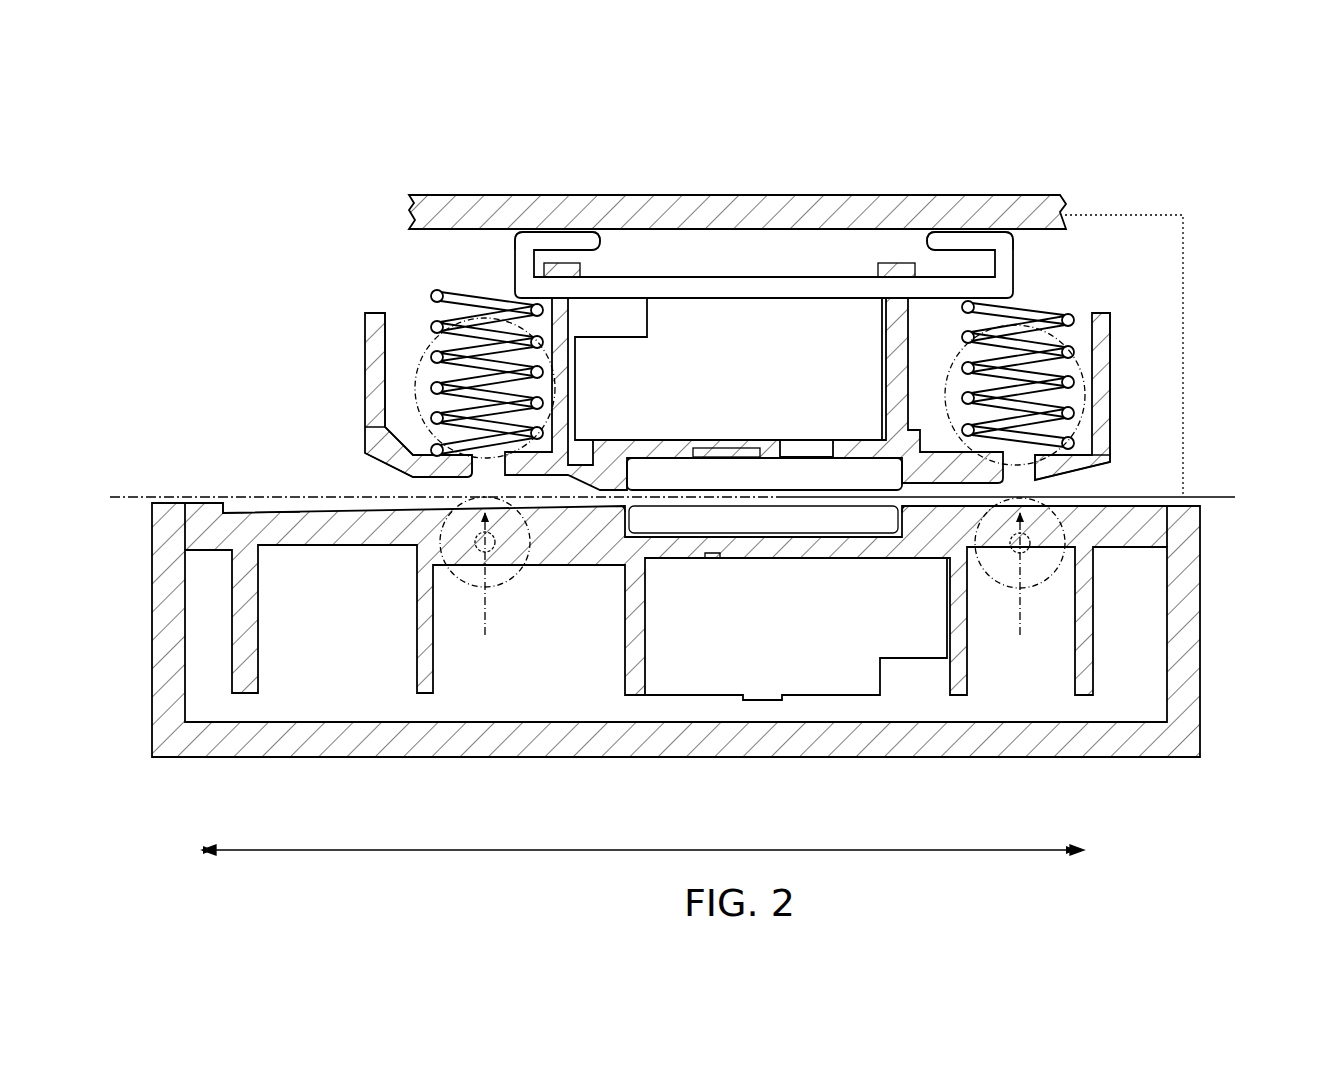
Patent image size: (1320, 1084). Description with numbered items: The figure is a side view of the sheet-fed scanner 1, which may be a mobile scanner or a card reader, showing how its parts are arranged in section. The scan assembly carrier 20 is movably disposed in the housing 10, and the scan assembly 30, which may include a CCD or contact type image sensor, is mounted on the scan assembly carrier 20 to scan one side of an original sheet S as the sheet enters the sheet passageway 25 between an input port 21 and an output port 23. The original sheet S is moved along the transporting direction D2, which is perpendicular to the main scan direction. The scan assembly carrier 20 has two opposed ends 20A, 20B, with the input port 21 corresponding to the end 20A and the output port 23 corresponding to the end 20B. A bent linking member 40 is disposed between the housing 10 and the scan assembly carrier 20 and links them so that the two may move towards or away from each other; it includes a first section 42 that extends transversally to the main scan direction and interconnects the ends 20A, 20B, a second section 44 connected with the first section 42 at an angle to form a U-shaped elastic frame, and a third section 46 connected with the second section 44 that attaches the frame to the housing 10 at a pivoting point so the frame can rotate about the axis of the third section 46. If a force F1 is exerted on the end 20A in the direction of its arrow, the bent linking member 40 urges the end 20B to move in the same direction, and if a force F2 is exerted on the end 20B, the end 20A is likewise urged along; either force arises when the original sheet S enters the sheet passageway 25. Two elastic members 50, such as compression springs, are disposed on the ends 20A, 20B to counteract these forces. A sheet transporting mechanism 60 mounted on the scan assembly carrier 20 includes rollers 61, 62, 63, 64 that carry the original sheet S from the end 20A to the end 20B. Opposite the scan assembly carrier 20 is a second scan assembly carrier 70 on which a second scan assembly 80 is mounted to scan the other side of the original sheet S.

The sheet-fed scanner 1 is at (736, 107).
The housing 10 is at (672, 196).
The scan assembly carrier 20 is at (358, 315).
The end of the scan assembly carrier 20A is at (365, 380).
The end of the scan assembly carrier 20B is at (1113, 405).
The input port 21 is at (365, 450).
The output port 23 is at (1112, 462).
The sheet passageway 25 is at (718, 500).
The scan assembly 30 is at (768, 325).
The bent linking member 40 is at (714, 265).
The first section 42 is at (830, 296).
The second section 44 is at (525, 267).
The third section 46 is at (570, 245).
The elastic member 50 is at (520, 290).
The sheet transporting mechanism 60 is at (205, 156).
The roller 61 is at (400, 399).
The roller 62 is at (458, 650).
The roller 63 is at (1140, 365).
The roller 64 is at (1010, 650).
The second scan assembly carrier 70 is at (235, 503).
The second scan assembly 80 is at (808, 682).
The original sheet S is at (357, 499).
The force F1 is at (507, 576).
The force F2 is at (1040, 576).
The transporting direction D2 is at (666, 849).